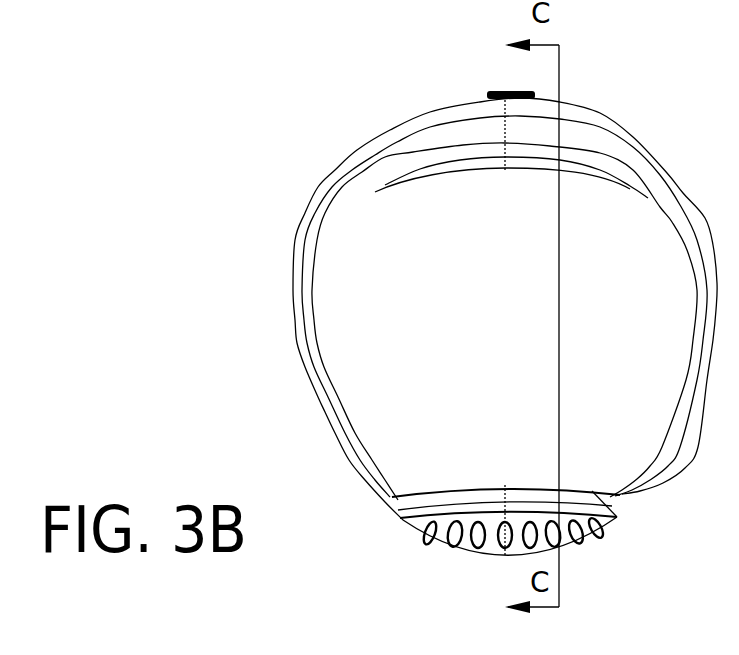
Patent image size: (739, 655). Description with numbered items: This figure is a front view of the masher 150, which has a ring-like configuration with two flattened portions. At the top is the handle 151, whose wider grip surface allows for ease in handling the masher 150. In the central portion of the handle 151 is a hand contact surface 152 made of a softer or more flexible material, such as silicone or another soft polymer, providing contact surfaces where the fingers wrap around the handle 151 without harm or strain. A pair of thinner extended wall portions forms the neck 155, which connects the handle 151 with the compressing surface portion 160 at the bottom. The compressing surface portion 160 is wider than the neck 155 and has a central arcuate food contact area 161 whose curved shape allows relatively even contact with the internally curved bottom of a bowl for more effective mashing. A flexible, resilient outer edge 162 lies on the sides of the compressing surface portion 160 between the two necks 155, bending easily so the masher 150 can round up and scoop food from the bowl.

The masher 150 is at (455, 328).
The handle 151 is at (335, 177).
The hand contact surface 152 is at (455, 101).
The neck 155 is at (302, 345).
The compressing surface portion 160 is at (454, 517).
The food contact area 161 is at (490, 552).
The flexible outer edge 162 is at (495, 489).